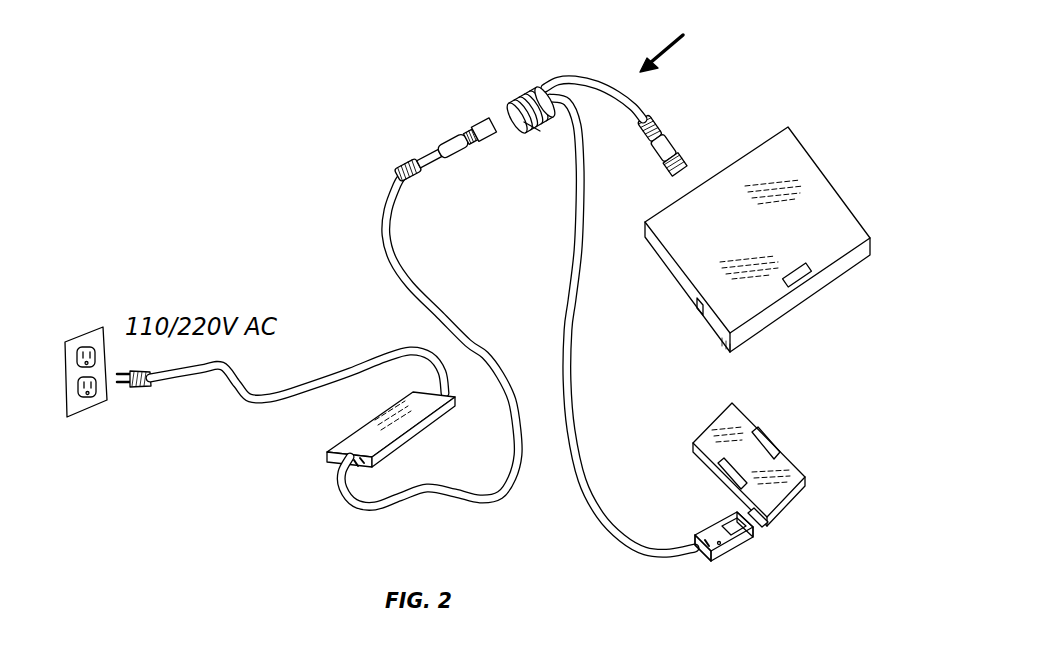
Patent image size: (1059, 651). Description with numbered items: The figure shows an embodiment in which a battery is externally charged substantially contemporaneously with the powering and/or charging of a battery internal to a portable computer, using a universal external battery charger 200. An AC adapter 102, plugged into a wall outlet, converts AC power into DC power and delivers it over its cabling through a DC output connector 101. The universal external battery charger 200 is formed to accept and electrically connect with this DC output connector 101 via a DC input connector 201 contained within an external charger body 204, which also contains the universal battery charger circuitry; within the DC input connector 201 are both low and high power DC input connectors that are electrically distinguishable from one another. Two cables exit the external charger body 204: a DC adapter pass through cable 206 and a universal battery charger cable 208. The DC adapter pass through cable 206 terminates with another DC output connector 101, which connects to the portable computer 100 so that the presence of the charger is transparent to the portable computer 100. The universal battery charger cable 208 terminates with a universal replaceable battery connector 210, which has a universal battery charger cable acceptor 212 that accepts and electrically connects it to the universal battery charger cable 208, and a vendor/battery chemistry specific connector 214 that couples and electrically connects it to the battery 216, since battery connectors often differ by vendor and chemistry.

The portable computer 100 is at (775, 241).
The DC output connector 101 is at (463, 132).
The AC adapter 102 is at (302, 419).
The universal external battery charger 200 is at (683, 39).
The DC input connector 201 is at (510, 97).
The external charger body 204 is at (514, 150).
The DC adapter pass through cable 206 is at (687, 97).
The universal battery charger cable 208 is at (622, 325).
The universal replaceable battery connector 210 is at (696, 514).
The universal battery charger cable acceptor 212 is at (669, 534).
The vendor/battery chemistry specific connector 214 is at (823, 581).
The battery 216 is at (760, 458).